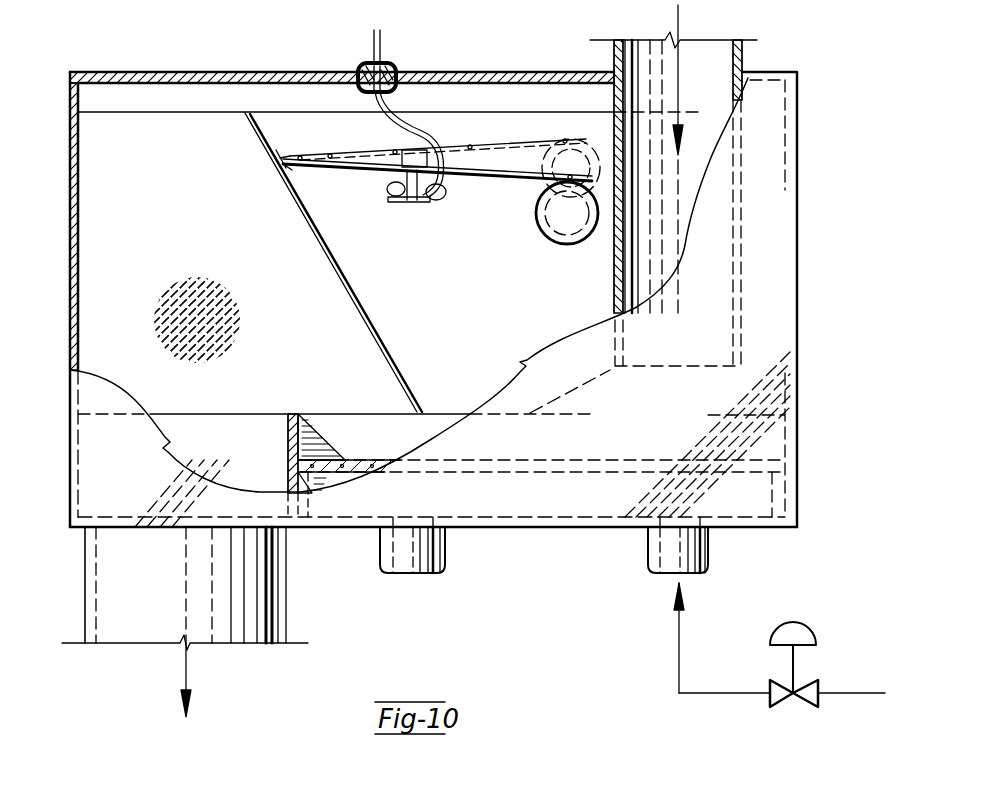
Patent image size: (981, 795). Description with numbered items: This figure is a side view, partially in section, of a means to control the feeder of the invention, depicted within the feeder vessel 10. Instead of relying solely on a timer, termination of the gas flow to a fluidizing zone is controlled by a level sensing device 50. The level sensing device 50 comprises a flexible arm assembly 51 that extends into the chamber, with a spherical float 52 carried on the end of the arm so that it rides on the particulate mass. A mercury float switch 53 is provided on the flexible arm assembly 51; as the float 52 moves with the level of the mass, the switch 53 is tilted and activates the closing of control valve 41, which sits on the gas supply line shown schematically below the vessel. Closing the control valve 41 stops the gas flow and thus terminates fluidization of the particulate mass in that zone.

The tank housing 10 is at (798, 262).
The control valve 41 is at (815, 682).
The level sensing device 50 is at (547, 218).
The flexible arm assembly 51 is at (378, 171).
The spherical float 52 is at (548, 180).
The mercury float switch 53 is at (405, 204).